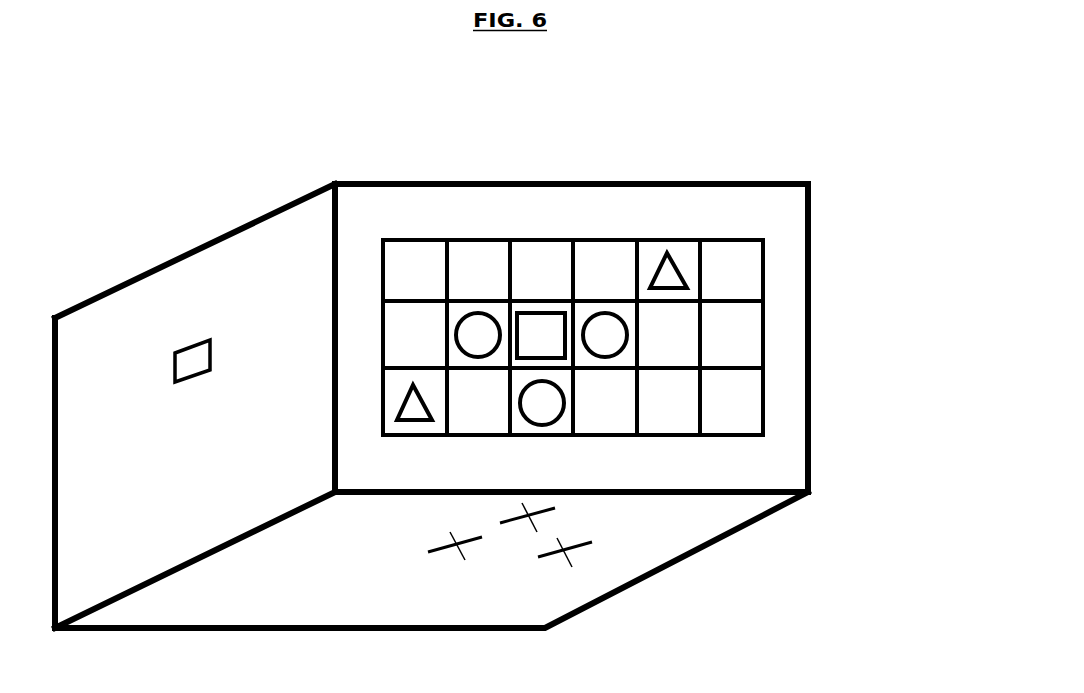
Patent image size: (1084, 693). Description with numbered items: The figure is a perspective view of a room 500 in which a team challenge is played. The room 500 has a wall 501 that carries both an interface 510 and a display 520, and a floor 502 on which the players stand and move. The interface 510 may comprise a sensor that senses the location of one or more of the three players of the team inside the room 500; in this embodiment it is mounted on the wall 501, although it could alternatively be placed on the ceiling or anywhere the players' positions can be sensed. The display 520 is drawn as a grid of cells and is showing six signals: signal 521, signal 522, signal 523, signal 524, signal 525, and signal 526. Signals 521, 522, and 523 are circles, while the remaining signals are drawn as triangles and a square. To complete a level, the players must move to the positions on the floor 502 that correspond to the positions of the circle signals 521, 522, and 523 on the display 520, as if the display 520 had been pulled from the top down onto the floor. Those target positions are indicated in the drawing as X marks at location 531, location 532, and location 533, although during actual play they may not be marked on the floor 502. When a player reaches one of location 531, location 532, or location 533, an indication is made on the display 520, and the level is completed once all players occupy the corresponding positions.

The room 500 is at (249, 351).
The wall 501 is at (653, 198).
The floor 502 is at (570, 607).
The interface 510 is at (190, 350).
The display 520 is at (448, 242).
The signal 521 is at (480, 322).
The signal 522 is at (555, 407).
The signal 523 is at (627, 325).
The signal 524 is at (677, 273).
The signal 525 is at (407, 392).
The signal 526 is at (547, 345).
The location 531 is at (482, 545).
The location 532 is at (555, 513).
The location 533 is at (592, 548).